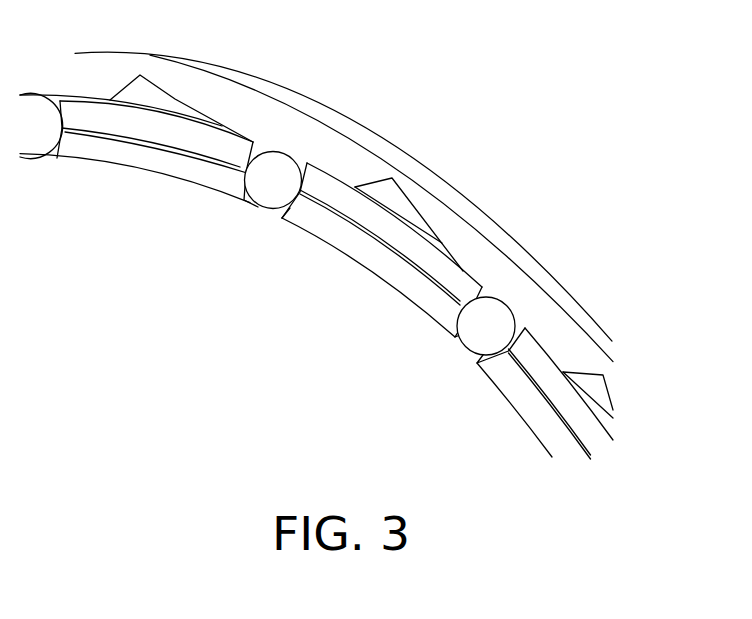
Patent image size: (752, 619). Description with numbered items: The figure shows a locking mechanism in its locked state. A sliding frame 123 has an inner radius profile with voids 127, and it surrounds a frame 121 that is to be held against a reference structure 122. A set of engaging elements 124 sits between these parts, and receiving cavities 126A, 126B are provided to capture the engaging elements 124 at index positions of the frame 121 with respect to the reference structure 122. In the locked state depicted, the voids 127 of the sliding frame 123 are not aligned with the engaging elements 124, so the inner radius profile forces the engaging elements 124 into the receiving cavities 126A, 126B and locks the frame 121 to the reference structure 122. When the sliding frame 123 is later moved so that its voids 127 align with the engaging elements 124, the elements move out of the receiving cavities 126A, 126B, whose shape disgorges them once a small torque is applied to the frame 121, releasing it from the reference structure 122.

The frame 121 is at (152, 167).
The reference structure 122 is at (558, 392).
The sliding frame 123 is at (442, 207).
The engaging elements 124 is at (273, 174).
The receiving cavity 126A is at (248, 203).
The receiving cavity 126B is at (453, 338).
The voids 127 is at (152, 90).